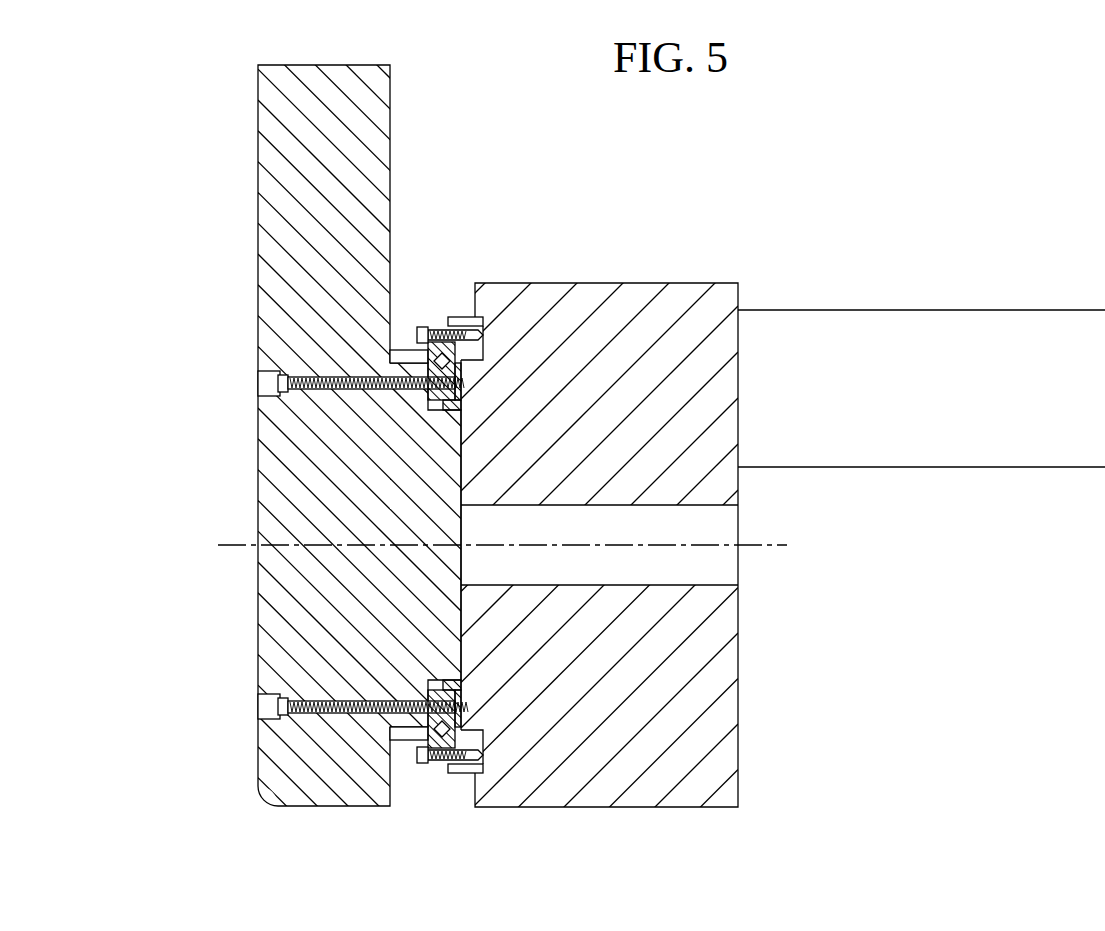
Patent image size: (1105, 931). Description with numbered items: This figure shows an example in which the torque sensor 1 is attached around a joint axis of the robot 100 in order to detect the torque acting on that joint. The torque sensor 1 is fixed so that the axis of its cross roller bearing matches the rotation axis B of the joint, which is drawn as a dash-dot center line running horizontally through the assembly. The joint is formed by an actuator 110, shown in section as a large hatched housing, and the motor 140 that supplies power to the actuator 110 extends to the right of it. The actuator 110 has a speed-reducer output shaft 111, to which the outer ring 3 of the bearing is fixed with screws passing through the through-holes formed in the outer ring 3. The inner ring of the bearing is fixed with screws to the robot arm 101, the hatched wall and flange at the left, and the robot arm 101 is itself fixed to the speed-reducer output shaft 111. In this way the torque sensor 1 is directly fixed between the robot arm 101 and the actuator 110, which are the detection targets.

The torque sensor 1 is at (375, 530).
The outer ring 3 is at (458, 346).
The robot 100 is at (307, 465).
The robot arm 101 is at (258, 621).
The actuator 110 is at (591, 465).
The speed-reducer output shaft 111 is at (450, 775).
The motor 140 is at (932, 309).
The axis B is at (770, 547).